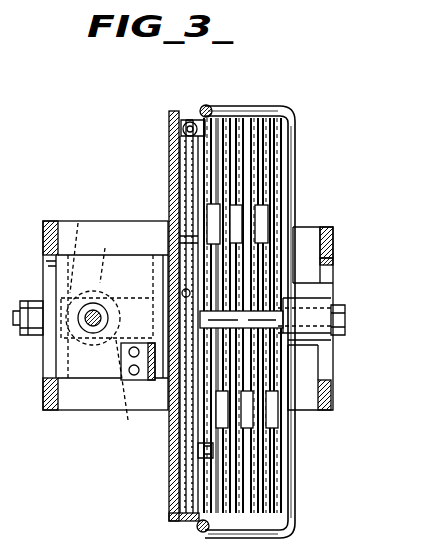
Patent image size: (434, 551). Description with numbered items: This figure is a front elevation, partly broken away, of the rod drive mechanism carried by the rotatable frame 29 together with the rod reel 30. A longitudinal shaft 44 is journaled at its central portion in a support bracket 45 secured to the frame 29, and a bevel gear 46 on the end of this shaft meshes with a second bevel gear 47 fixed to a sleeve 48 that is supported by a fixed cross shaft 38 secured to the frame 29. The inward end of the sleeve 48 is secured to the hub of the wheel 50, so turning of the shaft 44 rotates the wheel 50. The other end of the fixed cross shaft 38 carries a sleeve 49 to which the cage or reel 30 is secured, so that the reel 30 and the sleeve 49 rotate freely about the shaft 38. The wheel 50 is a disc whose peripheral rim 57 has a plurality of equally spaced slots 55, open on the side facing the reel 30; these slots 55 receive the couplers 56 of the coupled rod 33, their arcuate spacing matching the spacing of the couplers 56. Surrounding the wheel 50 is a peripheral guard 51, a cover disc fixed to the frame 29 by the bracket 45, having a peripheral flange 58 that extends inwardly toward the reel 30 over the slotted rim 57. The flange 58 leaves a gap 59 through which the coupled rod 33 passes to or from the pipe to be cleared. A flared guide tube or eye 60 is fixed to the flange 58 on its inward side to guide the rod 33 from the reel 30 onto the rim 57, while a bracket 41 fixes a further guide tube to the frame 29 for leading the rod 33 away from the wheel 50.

The frame 29 is at (325, 230).
The rod reel 30 is at (268, 92).
The coupled rod 33 is at (185, 168).
The fixed cross shaft 38 is at (245, 303).
The bracket 41 is at (143, 365).
The longitudinal shaft 44 is at (90, 305).
The support bracket 45 is at (80, 362).
The bevel gear 46 is at (96, 252).
The second bevel gear 47 is at (106, 281).
The sleeve 48 is at (127, 389).
The sleeve 49 is at (297, 340).
The wheel 50 is at (175, 140).
The peripheral guard 51 is at (165, 115).
The slots 55 is at (200, 97).
The couplers 56 is at (185, 115).
The peripheral rim 57 is at (170, 184).
The peripheral flange 58 is at (175, 110).
The gap 59 is at (174, 285).
The flared guide tube 60 is at (205, 443).